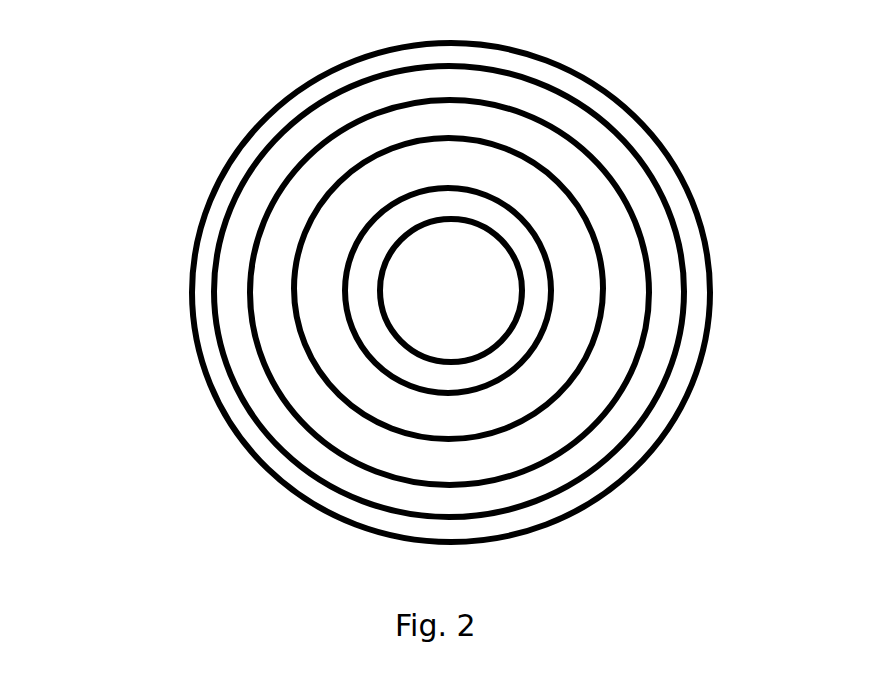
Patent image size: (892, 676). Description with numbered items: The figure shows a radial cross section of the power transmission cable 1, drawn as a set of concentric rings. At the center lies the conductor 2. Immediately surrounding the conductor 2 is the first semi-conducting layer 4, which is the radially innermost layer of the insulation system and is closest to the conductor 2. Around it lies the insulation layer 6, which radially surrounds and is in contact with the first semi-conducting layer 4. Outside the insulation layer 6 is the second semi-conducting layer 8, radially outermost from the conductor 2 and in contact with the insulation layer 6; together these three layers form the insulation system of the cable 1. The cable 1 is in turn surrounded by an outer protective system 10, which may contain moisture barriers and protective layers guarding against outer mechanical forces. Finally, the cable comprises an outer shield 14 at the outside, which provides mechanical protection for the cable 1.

The power transmission cable 1 is at (632, 100).
The conductor 2 is at (462, 278).
The first semi-conducting layer 4 is at (528, 329).
The insulation layer 6 is at (537, 387).
The second semi-conducting layer 8 is at (282, 343).
The outer protective system 10 is at (248, 217).
The outer shield 14 is at (287, 98).